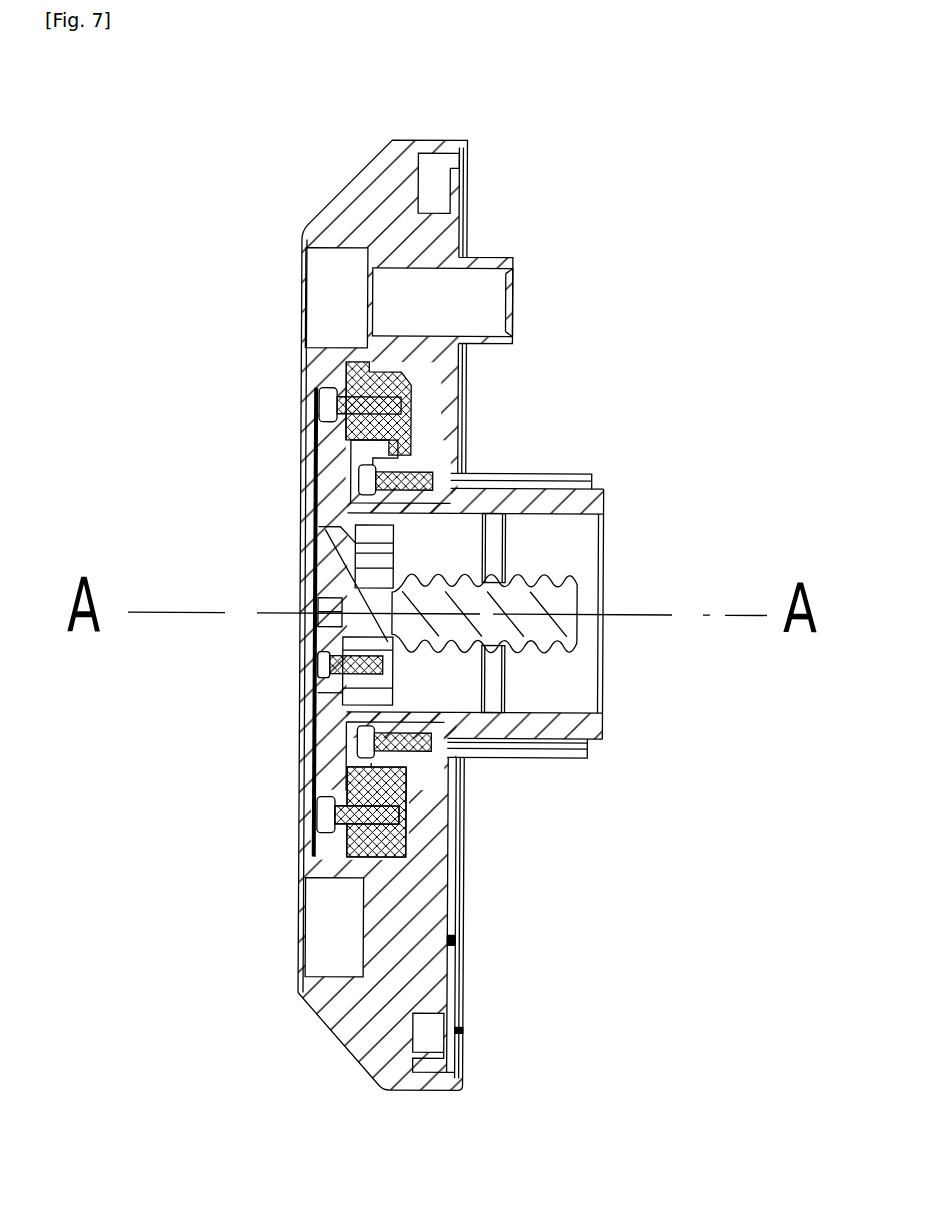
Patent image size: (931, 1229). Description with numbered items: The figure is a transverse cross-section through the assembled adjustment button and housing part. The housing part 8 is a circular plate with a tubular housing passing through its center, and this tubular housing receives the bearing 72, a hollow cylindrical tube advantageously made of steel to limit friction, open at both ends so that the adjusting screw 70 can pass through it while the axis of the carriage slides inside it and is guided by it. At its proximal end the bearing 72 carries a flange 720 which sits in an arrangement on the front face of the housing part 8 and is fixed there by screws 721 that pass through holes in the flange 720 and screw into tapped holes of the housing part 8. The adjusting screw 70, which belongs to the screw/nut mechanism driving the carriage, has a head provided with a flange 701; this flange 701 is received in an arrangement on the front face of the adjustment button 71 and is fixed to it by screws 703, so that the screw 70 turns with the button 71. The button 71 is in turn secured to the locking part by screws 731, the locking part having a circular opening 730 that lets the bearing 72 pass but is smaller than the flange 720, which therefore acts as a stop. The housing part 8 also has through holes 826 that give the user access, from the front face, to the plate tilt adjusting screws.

The housing part 8 is at (335, 1022).
The holes 826 is at (483, 295).
The bearing 72 is at (589, 480).
The adjusting screw 70 is at (575, 628).
The flange 701 is at (330, 568).
The screws 703 is at (330, 660).
The circular opening 730 is at (405, 447).
The screws 731 is at (318, 405).
The flange 720 is at (360, 448).
The screws 721 is at (358, 474).
The adjustment button 71 is at (327, 858).